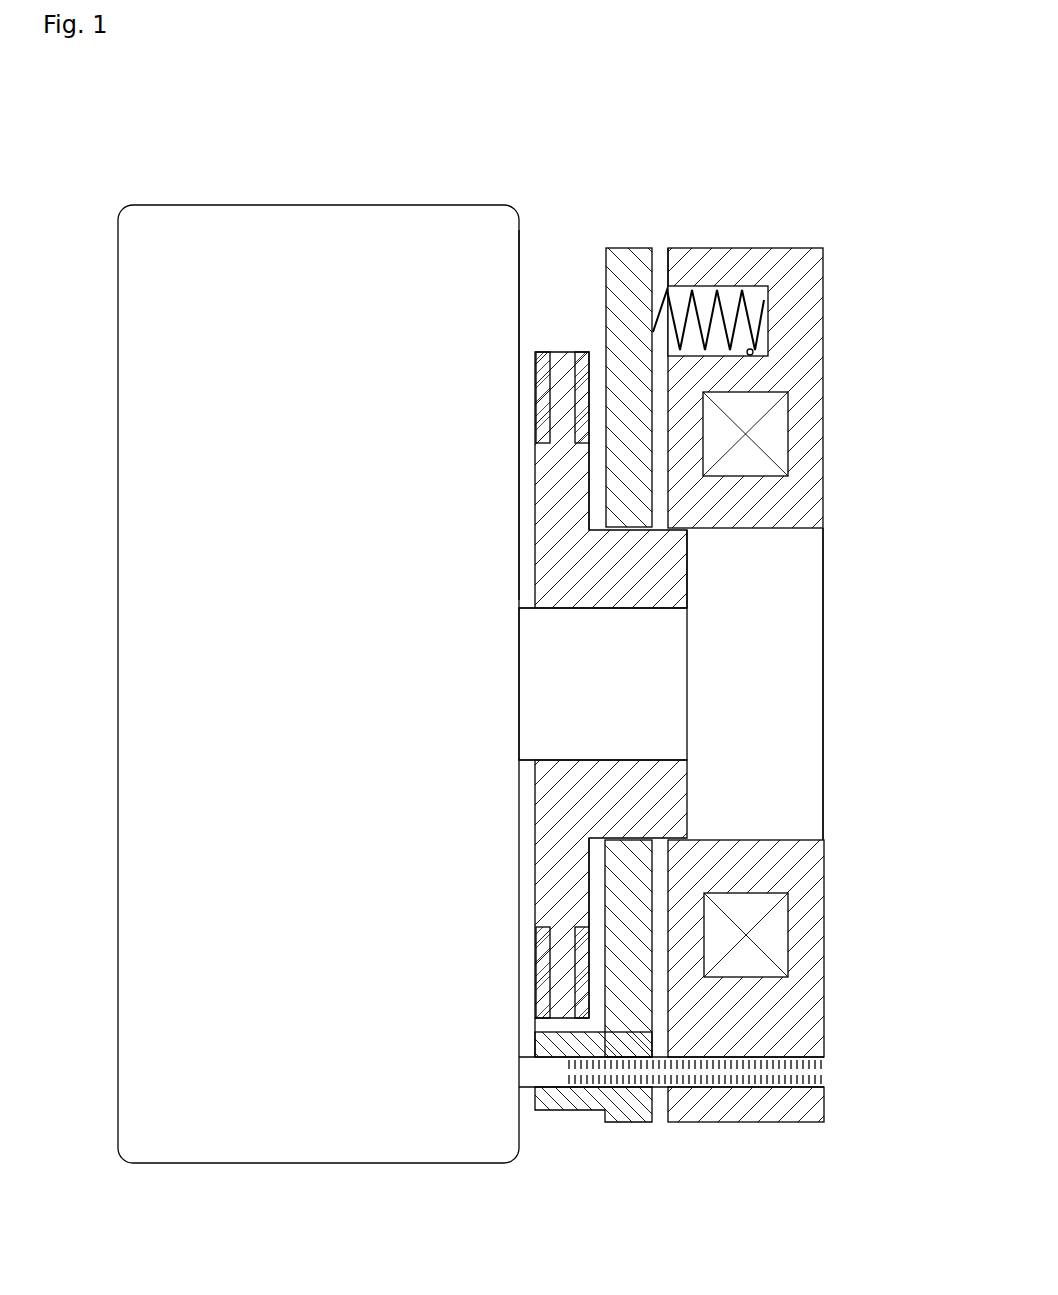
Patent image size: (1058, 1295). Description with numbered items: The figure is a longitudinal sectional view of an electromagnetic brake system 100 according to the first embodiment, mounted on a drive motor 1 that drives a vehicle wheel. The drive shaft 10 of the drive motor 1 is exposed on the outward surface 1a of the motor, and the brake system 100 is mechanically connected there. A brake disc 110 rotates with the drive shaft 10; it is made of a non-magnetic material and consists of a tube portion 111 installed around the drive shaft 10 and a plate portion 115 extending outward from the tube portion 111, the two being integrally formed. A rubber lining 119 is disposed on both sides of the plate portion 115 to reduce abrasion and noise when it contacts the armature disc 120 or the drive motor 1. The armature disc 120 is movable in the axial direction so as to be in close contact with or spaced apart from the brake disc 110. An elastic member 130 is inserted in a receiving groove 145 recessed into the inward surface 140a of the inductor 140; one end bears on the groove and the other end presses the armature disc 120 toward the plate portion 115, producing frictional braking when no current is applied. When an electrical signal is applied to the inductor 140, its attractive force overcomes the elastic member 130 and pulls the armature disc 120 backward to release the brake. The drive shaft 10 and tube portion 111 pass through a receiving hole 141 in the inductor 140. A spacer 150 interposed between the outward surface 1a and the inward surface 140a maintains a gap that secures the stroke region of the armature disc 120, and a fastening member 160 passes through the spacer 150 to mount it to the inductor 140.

The drive motor 1 is at (130, 691).
The outward surface 1a is at (519, 238).
The electromagnetic brake system 100 is at (808, 162).
The drive shaft 10 is at (672, 697).
The brake disc 110 is at (751, 656).
The tube portion 111 is at (682, 580).
The plate portion 115 is at (590, 480).
The lining 119 is at (583, 352).
The armature disc 120 is at (620, 255).
The elastic member 130 is at (745, 302).
The inductor 140 is at (819, 506).
The inward surface 140a is at (665, 276).
The receiving hole 141 is at (778, 747).
The receiving groove 145 is at (752, 353).
The spacer 150 is at (623, 1103).
The fastening member 160 is at (553, 1073).